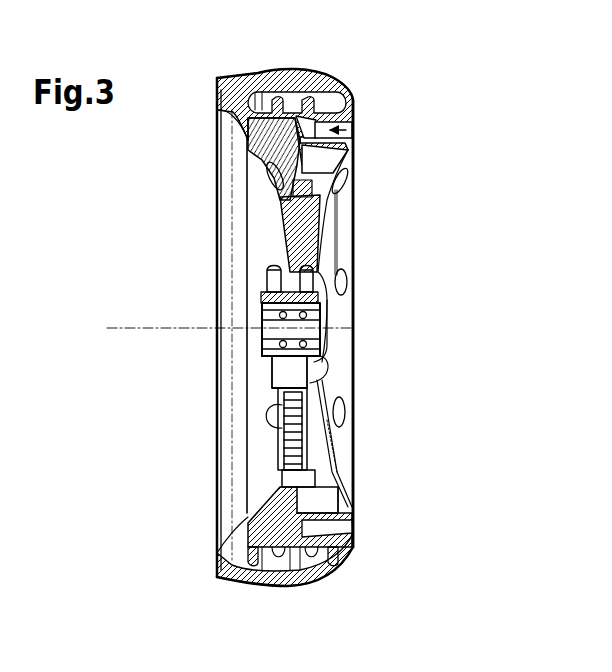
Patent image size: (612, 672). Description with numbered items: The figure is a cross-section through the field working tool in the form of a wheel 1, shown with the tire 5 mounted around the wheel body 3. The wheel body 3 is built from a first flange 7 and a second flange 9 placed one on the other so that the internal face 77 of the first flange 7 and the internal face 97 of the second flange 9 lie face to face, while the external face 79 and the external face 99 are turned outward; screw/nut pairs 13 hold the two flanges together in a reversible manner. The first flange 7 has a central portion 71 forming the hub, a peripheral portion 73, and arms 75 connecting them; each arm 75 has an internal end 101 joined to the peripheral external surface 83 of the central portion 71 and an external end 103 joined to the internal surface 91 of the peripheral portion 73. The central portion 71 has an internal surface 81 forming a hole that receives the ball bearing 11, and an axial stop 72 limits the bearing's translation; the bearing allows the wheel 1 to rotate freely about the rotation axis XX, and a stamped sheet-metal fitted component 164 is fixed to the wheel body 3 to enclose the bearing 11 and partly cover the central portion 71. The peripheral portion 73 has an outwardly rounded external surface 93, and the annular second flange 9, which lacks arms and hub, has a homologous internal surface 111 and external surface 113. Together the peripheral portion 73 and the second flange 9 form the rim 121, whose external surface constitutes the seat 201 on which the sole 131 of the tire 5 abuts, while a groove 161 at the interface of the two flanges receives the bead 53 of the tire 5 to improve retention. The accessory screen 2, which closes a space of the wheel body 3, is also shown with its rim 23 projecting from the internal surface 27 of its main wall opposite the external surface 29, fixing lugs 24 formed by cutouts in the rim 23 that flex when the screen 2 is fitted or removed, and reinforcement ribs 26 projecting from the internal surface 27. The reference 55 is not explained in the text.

The wheel 1 is at (376, 71).
The screen 2 is at (348, 447).
The wheel body 3 is at (428, 262).
The tire 5 is at (315, 68).
The first flange 7 is at (348, 463).
The second flange 9 is at (236, 578).
The ball bearing 11 is at (258, 331).
The screw/nut pairs 13 is at (338, 258).
The rim 23 is at (300, 447).
The fixing lugs 24 is at (300, 460).
The reinforcement ribs 26 is at (305, 428).
The internal surface 27 is at (300, 475).
The external surface 29 is at (350, 414).
The bead 53 is at (353, 100).
The side wall 55 is at (217, 80).
The central portion 71 is at (350, 290).
The axial stop 72 is at (330, 357).
The peripheral portion 73 is at (348, 527).
The arms 75 is at (350, 158).
The internal face 77 is at (262, 245).
The external face 79 is at (352, 200).
The internal surface 81 is at (340, 327).
The peripheral external surface 83 is at (322, 381).
The internal surface 91 is at (346, 480).
The external surface 93 is at (350, 545).
The internal face 97 is at (265, 205).
The external face 99 is at (217, 157).
The internal end 101 is at (260, 303).
The external end 103 is at (262, 197).
The internal surface 111 is at (250, 510).
The external surface 113 is at (262, 550).
The rim 121 is at (348, 130).
The sole 131 is at (260, 92).
The groove 161 is at (300, 552).
The fitted component 164 is at (268, 375).
The seat 201 is at (334, 545).
The rotation axis XX is at (130, 328).